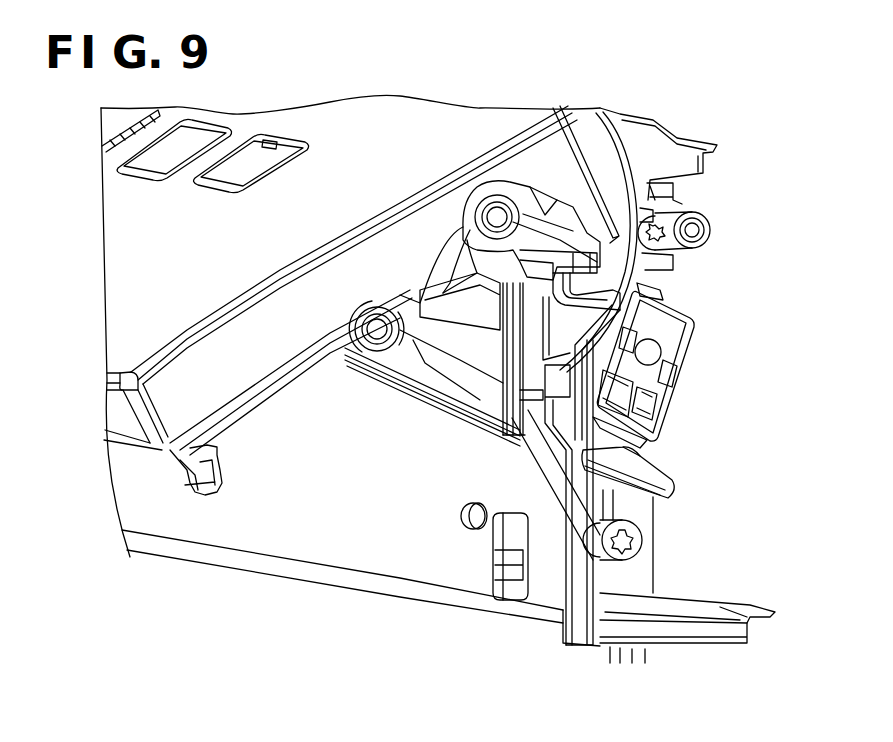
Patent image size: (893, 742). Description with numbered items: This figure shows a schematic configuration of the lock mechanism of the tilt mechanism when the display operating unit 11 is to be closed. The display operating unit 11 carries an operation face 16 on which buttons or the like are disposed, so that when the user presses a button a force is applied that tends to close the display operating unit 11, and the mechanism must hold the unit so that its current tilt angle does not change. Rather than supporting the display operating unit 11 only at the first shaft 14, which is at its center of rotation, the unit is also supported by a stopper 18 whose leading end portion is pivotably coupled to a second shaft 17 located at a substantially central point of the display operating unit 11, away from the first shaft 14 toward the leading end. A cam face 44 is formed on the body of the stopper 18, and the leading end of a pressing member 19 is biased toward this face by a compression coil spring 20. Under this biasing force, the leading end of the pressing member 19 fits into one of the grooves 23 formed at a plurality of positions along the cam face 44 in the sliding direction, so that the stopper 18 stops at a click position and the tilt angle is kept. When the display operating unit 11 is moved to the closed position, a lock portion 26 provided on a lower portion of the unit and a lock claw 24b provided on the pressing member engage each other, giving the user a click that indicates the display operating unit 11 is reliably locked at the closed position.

The display operating unit 11 is at (331, 118).
The first shaft 14 is at (490, 195).
The operation face 16 is at (670, 617).
The second shaft 17 is at (363, 363).
The stopper 18 is at (402, 385).
The pressing member 19 is at (663, 297).
The compression coil spring 20 is at (680, 342).
The grooves 23 is at (642, 418).
The lock claw 24b is at (510, 600).
The lock portion 26 is at (203, 497).
The cam face 44 is at (650, 457).